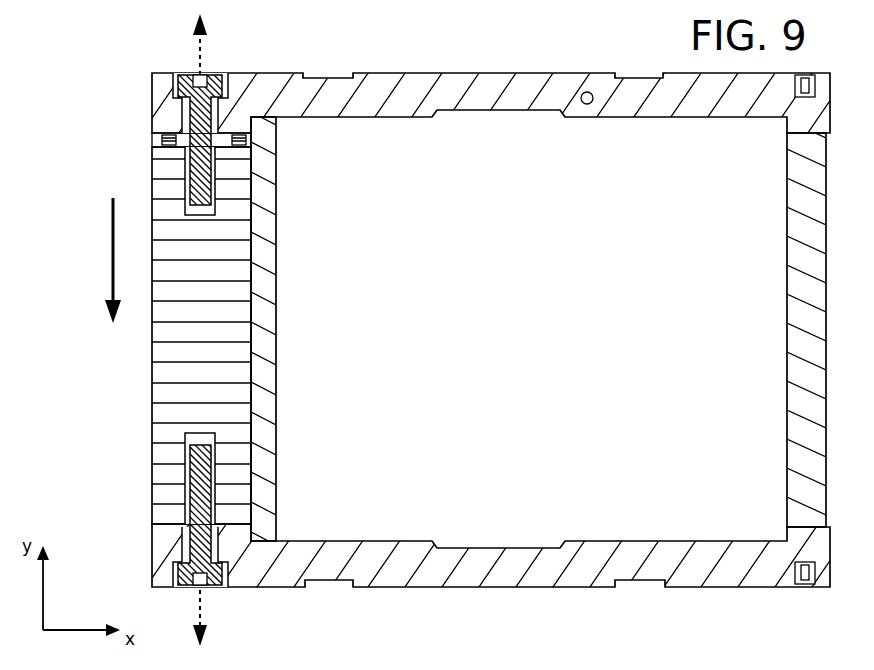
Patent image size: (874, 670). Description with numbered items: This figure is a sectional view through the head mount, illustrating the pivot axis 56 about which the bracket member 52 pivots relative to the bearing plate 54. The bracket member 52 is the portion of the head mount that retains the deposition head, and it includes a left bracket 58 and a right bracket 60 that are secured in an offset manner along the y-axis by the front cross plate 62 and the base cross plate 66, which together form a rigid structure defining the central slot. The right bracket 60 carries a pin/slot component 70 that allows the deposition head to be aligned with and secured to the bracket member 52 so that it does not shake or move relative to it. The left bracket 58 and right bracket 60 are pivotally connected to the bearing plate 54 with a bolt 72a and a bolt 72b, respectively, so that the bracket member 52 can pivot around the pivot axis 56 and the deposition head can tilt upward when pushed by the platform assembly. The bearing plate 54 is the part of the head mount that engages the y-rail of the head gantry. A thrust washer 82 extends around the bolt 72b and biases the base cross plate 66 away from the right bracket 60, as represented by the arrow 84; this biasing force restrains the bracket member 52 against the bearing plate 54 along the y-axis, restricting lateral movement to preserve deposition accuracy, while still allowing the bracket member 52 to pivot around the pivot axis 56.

The bracket member 52 is at (442, 331).
The bearing plate 54 is at (158, 417).
The pivot axis 56 is at (204, 50).
The left bracket 58 is at (478, 548).
The right bracket 60 is at (473, 103).
The front cross plate 62 is at (787, 283).
The base cross plate 66 is at (268, 296).
The pin/slot component 70 is at (589, 114).
The bolt 72a is at (222, 582).
The bolt 72b is at (200, 78).
The thrust washer 82 is at (140, 142).
The arrow 84 is at (113, 262).